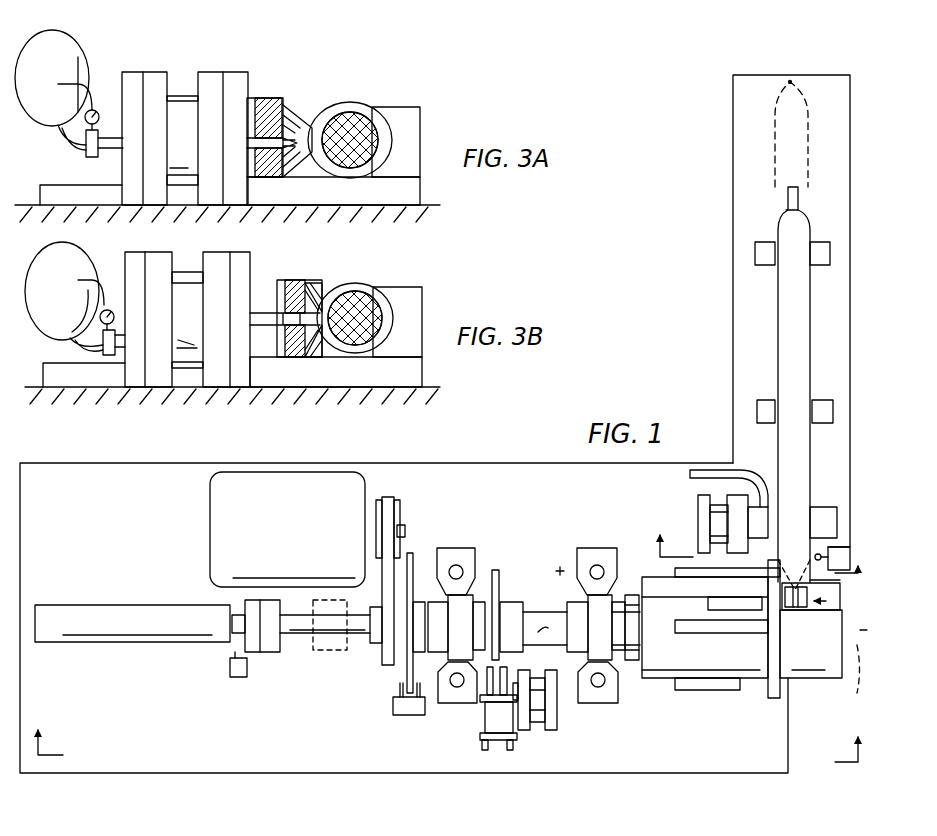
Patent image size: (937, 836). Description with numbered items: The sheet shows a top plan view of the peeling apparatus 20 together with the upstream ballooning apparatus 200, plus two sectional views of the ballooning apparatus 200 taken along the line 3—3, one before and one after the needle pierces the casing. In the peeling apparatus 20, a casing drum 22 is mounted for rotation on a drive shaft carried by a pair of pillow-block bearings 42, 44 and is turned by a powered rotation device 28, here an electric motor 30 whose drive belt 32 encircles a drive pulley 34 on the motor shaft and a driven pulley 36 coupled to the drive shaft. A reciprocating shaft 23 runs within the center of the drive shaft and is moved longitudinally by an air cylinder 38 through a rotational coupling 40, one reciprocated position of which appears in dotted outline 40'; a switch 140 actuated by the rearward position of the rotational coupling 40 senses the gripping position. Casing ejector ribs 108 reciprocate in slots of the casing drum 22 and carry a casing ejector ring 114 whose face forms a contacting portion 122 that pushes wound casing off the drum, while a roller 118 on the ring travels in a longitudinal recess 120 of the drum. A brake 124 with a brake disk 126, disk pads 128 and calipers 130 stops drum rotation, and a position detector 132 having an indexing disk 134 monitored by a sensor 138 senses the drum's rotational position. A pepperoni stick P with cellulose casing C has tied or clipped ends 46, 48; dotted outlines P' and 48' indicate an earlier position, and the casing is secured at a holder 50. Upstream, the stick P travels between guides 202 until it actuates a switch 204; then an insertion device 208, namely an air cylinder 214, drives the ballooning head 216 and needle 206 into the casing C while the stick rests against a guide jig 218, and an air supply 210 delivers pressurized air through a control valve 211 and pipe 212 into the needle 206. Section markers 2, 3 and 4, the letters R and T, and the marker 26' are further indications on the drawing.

In FIG. 1, the peeling apparatus 20 is at (689, 783).
In FIG. 1, the casing drum 22 is at (780, 680).
In FIG. 1, the reciprocating shaft 23 is at (292, 635).
In FIG. 1, the section line reference 26' is at (845, 699).
In FIG. 1, the powered rotation device 28 is at (371, 477).
In FIG. 1, the electric motor 30 is at (225, 514).
In FIG. 1, the drive belt 32 is at (388, 497).
In FIG. 1, the drive pulley 34 is at (402, 515).
In FIG. 1, the driven pulley 36 is at (375, 665).
In FIG. 1, the air cylinder 38 is at (92, 606).
In FIG. 1, the rotational coupling 40 is at (256, 677).
In FIG. 1, the rotational coupling in reciprocated position 40' is at (332, 677).
In FIG. 1, the pillow-block bearing 42 is at (465, 608).
In FIG. 1, the pillow-block bearing 44 is at (597, 603).
In FIG. 1, the end of pepperoni stick 46 is at (800, 195).
In FIG. 1, the end of pepperoni stick 48 is at (811, 569).
In FIG. 1, the end of pepperoni stick in prior position 48' is at (804, 505).
In FIG. 1, the holder 50 is at (827, 607).
In FIG. 1, the casing ejector rib 108 is at (693, 575).
In FIG. 1, the casing ejector ring 114 is at (775, 700).
In FIG. 1, the roller 118 is at (735, 600).
In FIG. 1, the semi-cylindrical longitudinal recess 120 is at (683, 603).
In FIG. 1, the contacting portion 122 is at (785, 665).
In FIG. 1, the brake 124 is at (523, 757).
In FIG. 1, the brake disk 126 is at (497, 568).
In FIG. 1, the disk pads 128 is at (485, 667).
In FIG. 1, the calipers 130 is at (473, 717).
In FIG. 1, the position detector 132 is at (407, 747).
In FIG. 1, the indexing disk 134 is at (413, 558).
In FIG. 1, the sensor 138 is at (393, 710).
In FIG. 1, the switch 140 is at (232, 668).
In FIG. 3A, the ballooning apparatus 200 is at (433, 79).
In FIG. 3B, the ballooning apparatus 200 is at (429, 269).
In FIG. 1, the ballooning apparatus 200 is at (721, 454).
In FIG. 1, the guides 202 is at (822, 400).
In FIG. 1, the switch 204 is at (842, 550).
In FIG. 3A, the needle 206 is at (300, 122).
In FIG. 3B, the needle 206 is at (310, 292).
In FIG. 3A, the insertion device 208 is at (219, 63).
In FIG. 3B, the insertion device 208 is at (258, 246).
In FIG. 3A, the air supply 210 is at (90, 48).
In FIG. 3B, the air supply 210 is at (86, 250).
In FIG. 3A, the air supply control valve 211 is at (63, 100).
In FIG. 3B, the air supply control valve 211 is at (82, 298).
In FIG. 3A, the pipe 212 is at (72, 147).
In FIG. 3B, the pipe 212 is at (88, 342).
In FIG. 3A, the air cylinder 214 is at (182, 128).
In FIG. 3B, the air cylinder 214 is at (185, 330).
In FIG. 3A, the ballooning head 216 is at (298, 102).
In FIG. 3B, the ballooning head 216 is at (303, 348).
In FIG. 3A, the guide jig 218 is at (410, 135).
In FIG. 3B, the guide jig 218 is at (408, 340).
In FIG. 3A, the casing C is at (352, 103).
In FIG. 3B, the casing C is at (352, 286).
In FIG. 1, the casing C is at (778, 215).
In FIG. 3A, the pepperoni stick P is at (389, 132).
In FIG. 3B, the pepperoni stick P is at (391, 316).
In FIG. 1, the pepperoni stick P is at (776, 388).
In FIG. 1, the container (raised position) P' is at (806, 134).
In FIG. 1, the rotation direction R is at (552, 578).
In FIG. 1, the section line T is at (856, 658).
In FIG. 1, the section line 2 is at (448, 731).
In FIG. 1, the section line 3— 3 is at (759, 554).
In FIG. 1, the section line 4 is at (849, 559).